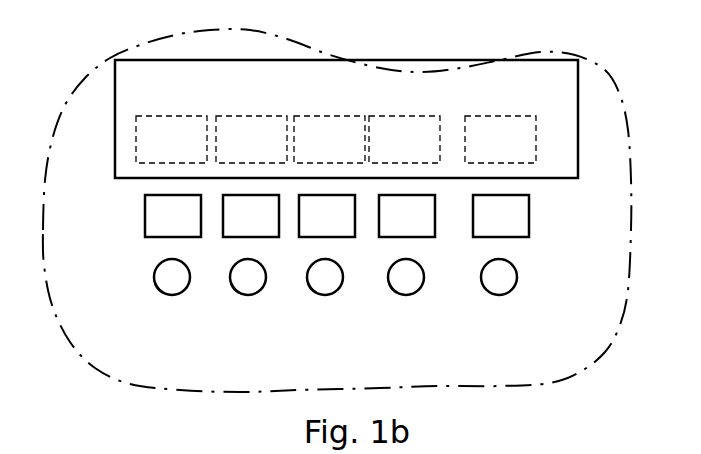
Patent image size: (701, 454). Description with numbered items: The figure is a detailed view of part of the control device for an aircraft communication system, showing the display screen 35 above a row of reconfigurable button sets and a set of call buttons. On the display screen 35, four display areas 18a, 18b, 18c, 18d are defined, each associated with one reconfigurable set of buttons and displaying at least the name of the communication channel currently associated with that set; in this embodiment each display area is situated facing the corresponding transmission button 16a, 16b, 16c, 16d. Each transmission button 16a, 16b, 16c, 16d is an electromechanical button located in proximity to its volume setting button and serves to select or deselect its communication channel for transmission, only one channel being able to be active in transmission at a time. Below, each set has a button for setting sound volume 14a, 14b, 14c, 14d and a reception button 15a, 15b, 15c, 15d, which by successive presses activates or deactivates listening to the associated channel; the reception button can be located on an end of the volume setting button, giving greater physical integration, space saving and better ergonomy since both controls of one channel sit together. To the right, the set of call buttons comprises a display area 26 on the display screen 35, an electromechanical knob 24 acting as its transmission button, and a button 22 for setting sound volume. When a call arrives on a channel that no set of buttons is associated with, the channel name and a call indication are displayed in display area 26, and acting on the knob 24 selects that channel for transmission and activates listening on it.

The display screen 35 is at (130, 180).
The display area 18a is at (168, 116).
The display area 18b is at (246, 116).
The display area 18c is at (321, 116).
The display area 18d is at (425, 115).
The display area 26 is at (473, 115).
The transmission button 16a is at (151, 229).
The transmission button 16b is at (229, 229).
The transmission button 16c is at (305, 229).
The transmission button 16d is at (385, 229).
The electromechanical knob 24 is at (486, 229).
The button for setting sound volume 14a is at (172, 295).
The button for setting sound volume 14b is at (248, 295).
The button for setting sound volume 14c is at (325, 295).
The button for setting sound volume 14d is at (406, 295).
The button for setting sound volume 22 is at (499, 295).
The reception button 15a is at (163, 277).
The reception button 15b is at (239, 277).
The reception button 15c is at (316, 277).
The reception button 15d is at (397, 277).